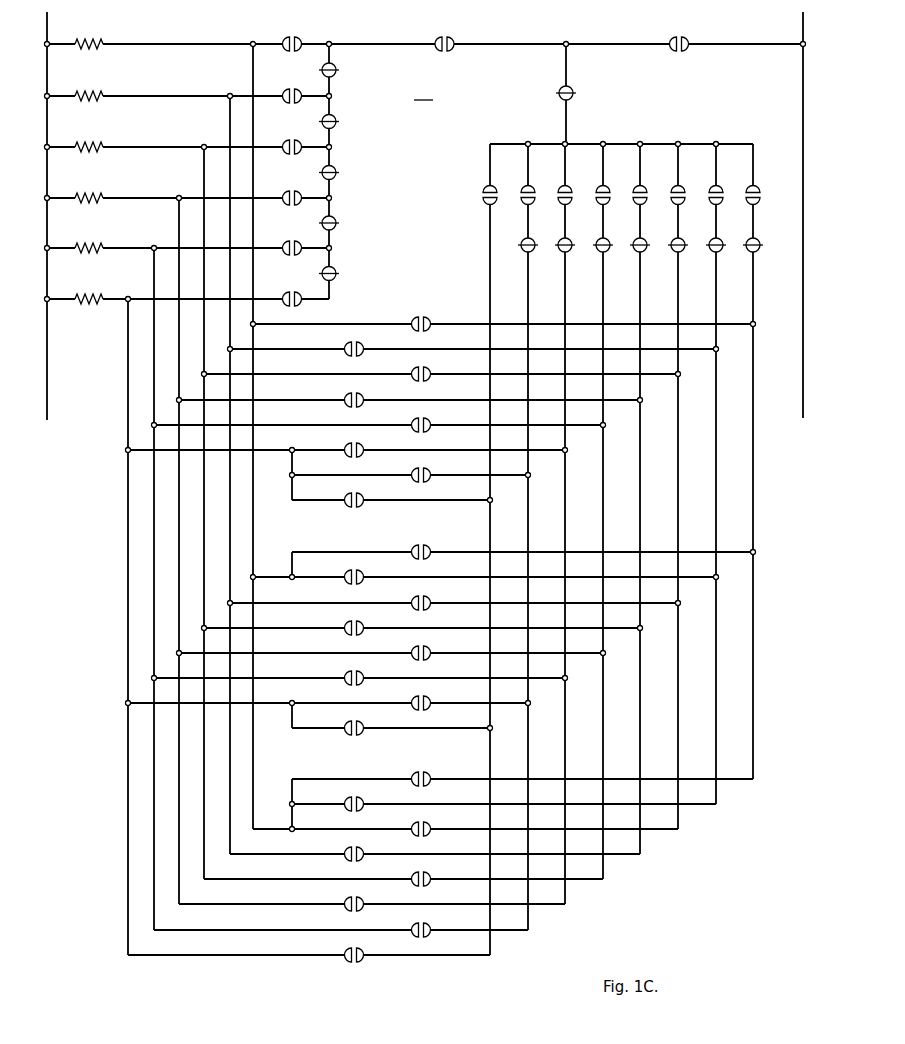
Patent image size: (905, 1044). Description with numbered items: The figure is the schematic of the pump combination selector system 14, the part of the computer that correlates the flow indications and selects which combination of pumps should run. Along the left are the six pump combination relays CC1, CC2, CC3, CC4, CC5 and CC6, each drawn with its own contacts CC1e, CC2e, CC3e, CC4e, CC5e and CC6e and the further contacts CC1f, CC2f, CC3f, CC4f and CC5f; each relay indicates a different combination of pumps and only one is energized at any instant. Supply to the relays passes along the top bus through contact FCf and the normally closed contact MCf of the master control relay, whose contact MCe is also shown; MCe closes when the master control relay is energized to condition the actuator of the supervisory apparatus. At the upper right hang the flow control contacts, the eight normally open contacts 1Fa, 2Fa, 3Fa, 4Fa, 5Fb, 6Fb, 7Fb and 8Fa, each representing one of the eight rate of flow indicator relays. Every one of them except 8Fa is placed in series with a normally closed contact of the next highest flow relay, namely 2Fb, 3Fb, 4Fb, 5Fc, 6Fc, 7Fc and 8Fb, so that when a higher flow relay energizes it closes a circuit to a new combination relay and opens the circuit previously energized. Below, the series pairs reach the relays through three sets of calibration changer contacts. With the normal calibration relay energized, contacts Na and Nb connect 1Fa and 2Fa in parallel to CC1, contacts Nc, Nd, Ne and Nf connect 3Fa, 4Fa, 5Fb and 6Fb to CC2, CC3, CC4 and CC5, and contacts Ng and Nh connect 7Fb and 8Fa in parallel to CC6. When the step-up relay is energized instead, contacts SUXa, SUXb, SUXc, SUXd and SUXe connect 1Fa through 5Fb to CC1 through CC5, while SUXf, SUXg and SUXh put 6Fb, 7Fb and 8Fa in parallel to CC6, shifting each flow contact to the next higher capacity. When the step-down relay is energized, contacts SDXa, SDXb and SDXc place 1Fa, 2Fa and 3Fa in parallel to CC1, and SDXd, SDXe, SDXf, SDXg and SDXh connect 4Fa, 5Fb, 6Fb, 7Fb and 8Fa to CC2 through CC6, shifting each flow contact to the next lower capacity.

The pump combination relay CC1 is at (91, 42).
The pump combination relay CC2 is at (91, 94).
The pump combination relay CC3 is at (91, 145).
The pump combination relay CC4 is at (91, 196).
The pump combination relay CC5 is at (91, 246).
The pump combination relay CC6 is at (91, 297).
The contact of pump combination relay CC1 CC1e is at (301, 38).
The contact of pump combination relay CC2 CC2e is at (300, 93).
The contact of pump combination relay CC3 CC3e is at (300, 144).
The contact of pump combination relay CC4 CC4e is at (300, 195).
The contact of pump combination relay CC5 CC5e is at (300, 245).
The contact of pump combination relay CC6 CC6e is at (300, 296).
The contact of pump combination relay CC1 CC1f is at (334, 68).
The contact of pump combination relay CC2 CC2f is at (334, 119).
The contact of pump combination relay CC3 CC3f is at (334, 170).
The contact of pump combination relay CC4 CC4f is at (334, 221).
The contact of pump combination relay CC5 CC5f is at (334, 271).
The contact of master control relay MC MCe is at (436, 37).
The normally closed contact of master control relay MC MCf is at (557, 90).
The contact FCf is at (672, 37).
The pump combination selector system 14 is at (424, 92).
The normally open contact of rate of flow indicator relay 8F 8Fa is at (483, 190).
The normally open contact of rate of flow indicator relay 7F 7Fb is at (521, 188).
The normally open contact of rate of flow indicator relay 6F 6Fb is at (558, 188).
The normally open contact of rate of flow indicator relay 5F 5Fb is at (596, 188).
The normally open contact of rate of flow indicator relay 4F 4Fa is at (633, 188).
The normally open contact of rate of flow indicator relay 3F 3Fa is at (671, 188).
The normally open contact of rate of flow indicator relay 2F 2Fa is at (709, 188).
The normally open contact of rate of flow indicator relay 1F 1Fa is at (746, 188).
The normally closed contact of rate of flow indicator relay 8F 8Fb is at (520, 245).
The normally closed contact of rate of flow indicator relay 7F 7Fc is at (557, 245).
The normally closed contact of rate of flow indicator relay 6F 6Fc is at (595, 245).
The normally closed contact of rate of flow indicator relay 5F 5Fc is at (632, 245).
The normally closed contact of rate of flow indicator relay 4F 4Fb is at (670, 245).
The normally closed contact of rate of flow indicator relay 3F 3Fb is at (708, 245).
The normally closed contact of rate of flow indicator relay 2F 2Fb is at (745, 245).
The contact of auxiliary step-up relay SUX SUXa is at (428, 321).
The contact of auxiliary step-up relay SUX SUXb is at (345, 345).
The contact of auxiliary step-up relay SUX SUXc is at (428, 371).
The contact of auxiliary step-up relay SUX SUXd is at (345, 396).
The contact of auxiliary step-up relay SUX SUXe is at (428, 422).
The contact of auxiliary step-up relay SUX SUXf is at (345, 446).
The contact of auxiliary step-up relay SUX SUXg is at (428, 472).
The contact of auxiliary step-up relay SUX SUXh is at (345, 496).
The contact of normal calibration relay N Na is at (428, 549).
The contact of normal calibration relay N Nb is at (345, 573).
The contact of normal calibration relay N Nc is at (428, 600).
The contact of normal calibration relay N Nd is at (345, 624).
The contact of normal calibration relay N Ne is at (428, 650).
The contact of normal calibration relay N Nf is at (345, 674).
The contact of normal calibration relay N Ng is at (428, 700).
The contact of normal calibration relay N Nh is at (345, 724).
The contact of step-down calibration relay SDX SDXa is at (428, 776).
The contact of step-down calibration relay SDX SDXb is at (345, 800).
The contact of step-down calibration relay SDX SDXc is at (428, 826).
The contact of step-down calibration relay SDX SDXd is at (345, 850).
The contact of step-down calibration relay SDX SDXe is at (428, 876).
The contact of step-down calibration relay SDX SDXf is at (345, 900).
The contact of step-down calibration relay SDX SDXg is at (428, 927).
The contact of step-down calibration relay SDX SDXh is at (345, 951).